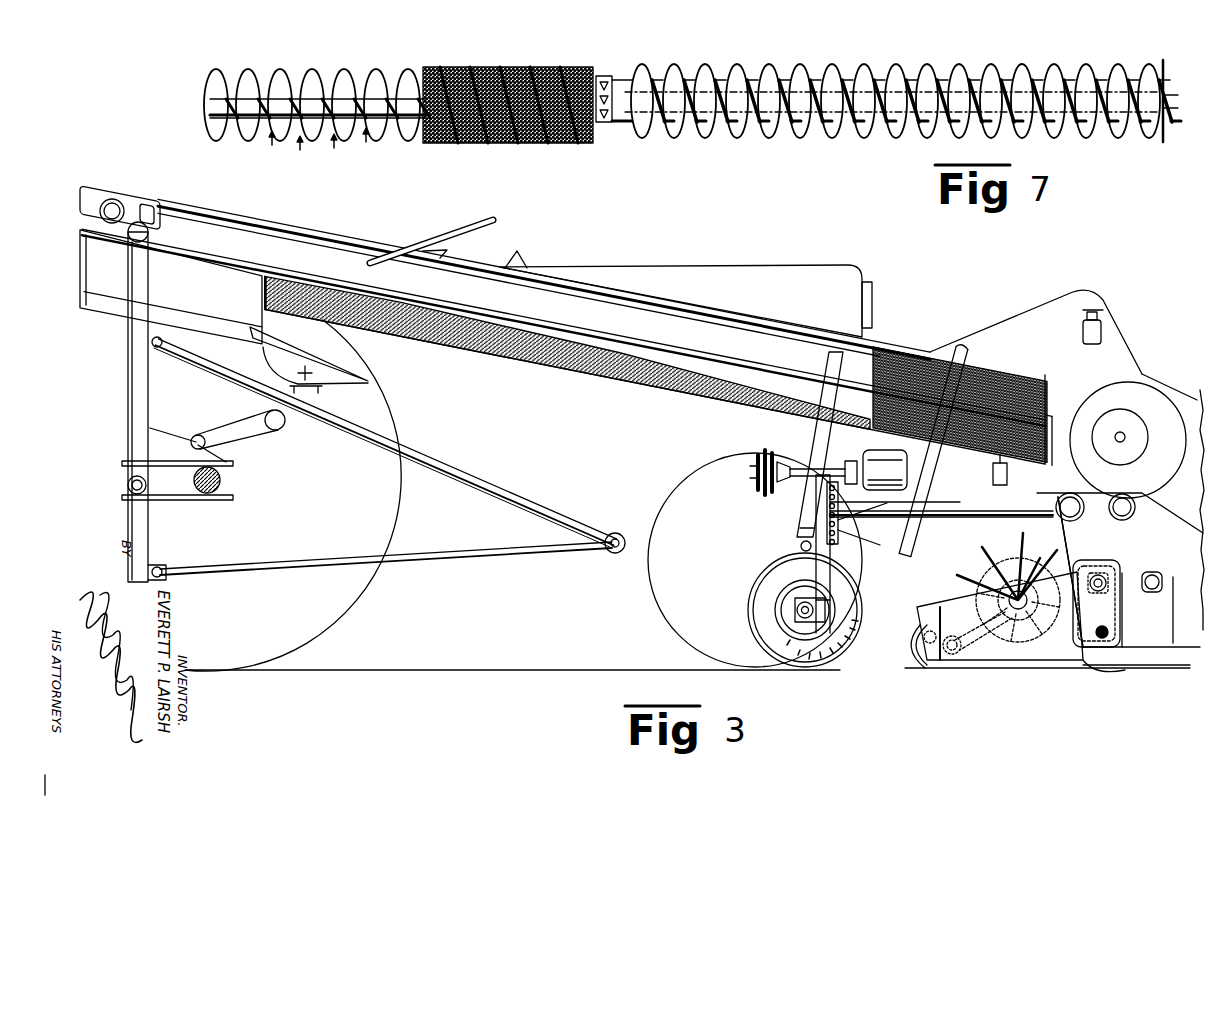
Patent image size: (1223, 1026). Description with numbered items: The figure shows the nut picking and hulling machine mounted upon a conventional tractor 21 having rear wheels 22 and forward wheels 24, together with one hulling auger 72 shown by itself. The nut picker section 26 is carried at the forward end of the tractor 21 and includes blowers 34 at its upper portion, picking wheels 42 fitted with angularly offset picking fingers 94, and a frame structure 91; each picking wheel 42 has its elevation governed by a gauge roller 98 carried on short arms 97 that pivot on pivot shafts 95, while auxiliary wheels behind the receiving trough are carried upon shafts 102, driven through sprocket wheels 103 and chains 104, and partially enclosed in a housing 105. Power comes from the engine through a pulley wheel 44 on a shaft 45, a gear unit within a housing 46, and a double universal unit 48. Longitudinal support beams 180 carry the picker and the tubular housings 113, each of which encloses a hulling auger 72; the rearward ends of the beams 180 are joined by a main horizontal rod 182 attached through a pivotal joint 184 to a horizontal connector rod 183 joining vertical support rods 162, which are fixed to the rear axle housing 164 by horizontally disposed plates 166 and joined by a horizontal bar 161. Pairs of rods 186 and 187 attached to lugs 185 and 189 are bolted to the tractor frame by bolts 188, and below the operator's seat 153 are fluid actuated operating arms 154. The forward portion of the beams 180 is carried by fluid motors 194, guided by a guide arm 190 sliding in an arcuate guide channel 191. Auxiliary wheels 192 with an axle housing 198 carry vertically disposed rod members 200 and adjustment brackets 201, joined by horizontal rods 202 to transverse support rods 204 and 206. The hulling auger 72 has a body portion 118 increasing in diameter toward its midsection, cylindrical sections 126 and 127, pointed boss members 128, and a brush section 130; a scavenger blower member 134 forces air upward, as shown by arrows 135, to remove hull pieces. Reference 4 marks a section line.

In FIG. 7, the hulling auger 72 is at (952, 80).
In FIG. 7, the cylindrical body section 127 is at (325, 85).
In FIG. 7, the arrows 135 is at (305, 150).
In FIG. 7, the brush section 130 is at (478, 68).
In FIG. 7, the pointed boss members 128 is at (600, 75).
In FIG. 7, the cylindrical body section 126 is at (896, 86).
In FIG. 7, the body portion 118 is at (1103, 75).
In FIG. 3, the longitudinal support beams 180 is at (256, 222).
In FIG. 3, the tubular housing 113 is at (628, 378).
In FIG. 3, the tractor 21 is at (768, 270).
In FIG. 3, the section line 4 is at (316, 204).
In FIG. 3, the scavenger blower member 134 is at (85, 300).
In FIG. 3, the pivotal joint 184 is at (153, 212).
In FIG. 3, the main horizontal rod 182 is at (100, 205).
In FIG. 3, the horizontal connector rod 183 is at (149, 232).
In FIG. 3, the vertical support rods 162 is at (140, 403).
In FIG. 3, the lug 185 is at (159, 348).
In FIG. 3, the rods 186 is at (508, 494).
In FIG. 3, the rods 187 is at (484, 553).
In FIG. 3, the bolts 188 is at (614, 553).
In FIG. 3, the lug 189 is at (163, 568).
In FIG. 3, the fluid actuated operating arms 154 is at (283, 430).
In FIG. 3, the horizontally disposed plates 166 is at (168, 466).
In FIG. 3, the horizontal bar 161 is at (127, 482).
In FIG. 3, the rear axle housing 164 is at (221, 480).
In FIG. 3, the operator's seat 153 is at (370, 380).
In FIG. 3, the rear wheels 22 is at (330, 612).
In FIG. 3, the forward wheels 24 is at (667, 508).
In FIG. 3, the auxiliary wheels 192 is at (748, 608).
In FIG. 3, the axle housing 198 is at (795, 606).
In FIG. 3, the vertically disposed rod members 200 is at (835, 548).
In FIG. 3, the adjustment bracket 201 is at (842, 540).
In FIG. 3, the fluid motors 194 is at (833, 362).
In FIG. 3, the pulley wheel 44 is at (760, 455).
In FIG. 3, the shaft 45 is at (808, 466).
In FIG. 3, the housing 46 is at (846, 464).
In FIG. 3, the double universal unit 48 is at (885, 470).
In FIG. 3, the guide arm 190 is at (925, 473).
In FIG. 3, the arcuate guide channel 191 is at (915, 548).
In FIG. 3, the horizontal forwardly extending rods 202 is at (941, 512).
In FIG. 3, the nut picker section 26 is at (1128, 343).
In FIG. 3, the blowers 34 is at (1138, 418).
In FIG. 3, the transverse support rod 204 is at (1070, 521).
In FIG. 3, the transverse support rod 206 is at (1130, 516).
In FIG. 3, the frame structure 91 is at (1078, 484).
In FIG. 3, the picking wheels 42 is at (1000, 616).
In FIG. 3, the picking fingers 94 is at (1020, 575).
In FIG. 3, the pivot shafts 95 is at (959, 647).
In FIG. 3, the short arms 97 is at (925, 625).
In FIG. 3, the gauge roller 98 is at (924, 668).
In FIG. 3, the sprocket wheels 103 is at (1110, 567).
In FIG. 3, the chains 104 is at (1120, 609).
In FIG. 3, the housing 105 is at (1154, 576).
In FIG. 3, the shafts 102 is at (1118, 660).